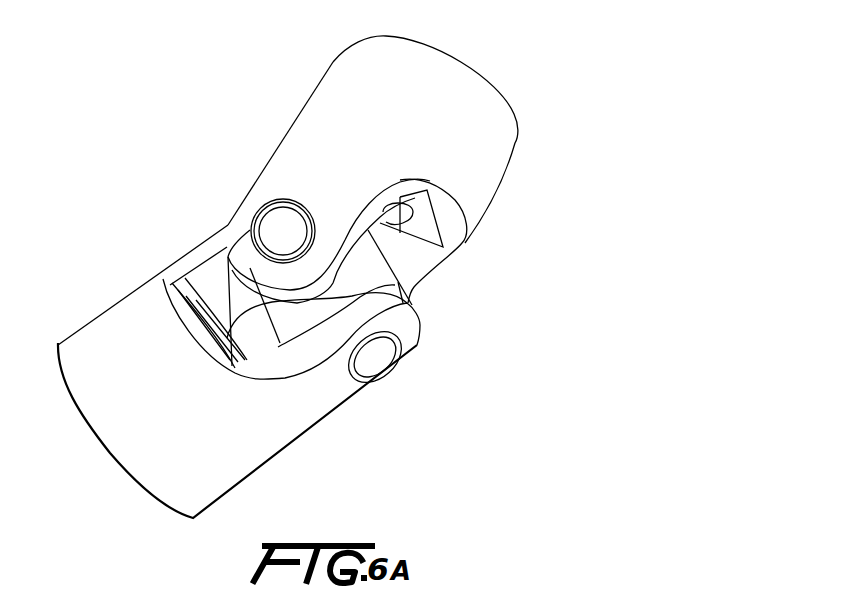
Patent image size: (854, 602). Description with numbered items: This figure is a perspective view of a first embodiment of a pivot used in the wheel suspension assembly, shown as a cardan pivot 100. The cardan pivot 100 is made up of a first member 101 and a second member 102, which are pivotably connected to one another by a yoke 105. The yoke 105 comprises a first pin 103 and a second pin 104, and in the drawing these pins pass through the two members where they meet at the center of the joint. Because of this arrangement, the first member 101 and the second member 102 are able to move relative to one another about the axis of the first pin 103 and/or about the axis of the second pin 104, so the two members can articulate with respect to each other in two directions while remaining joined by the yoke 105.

The cardan pivot 100 is at (157, 184).
The first member 101 is at (350, 70).
The second member 102 is at (98, 332).
The first pin 103 is at (276, 228).
The second pin 104 is at (375, 360).
The yoke 105 is at (377, 270).